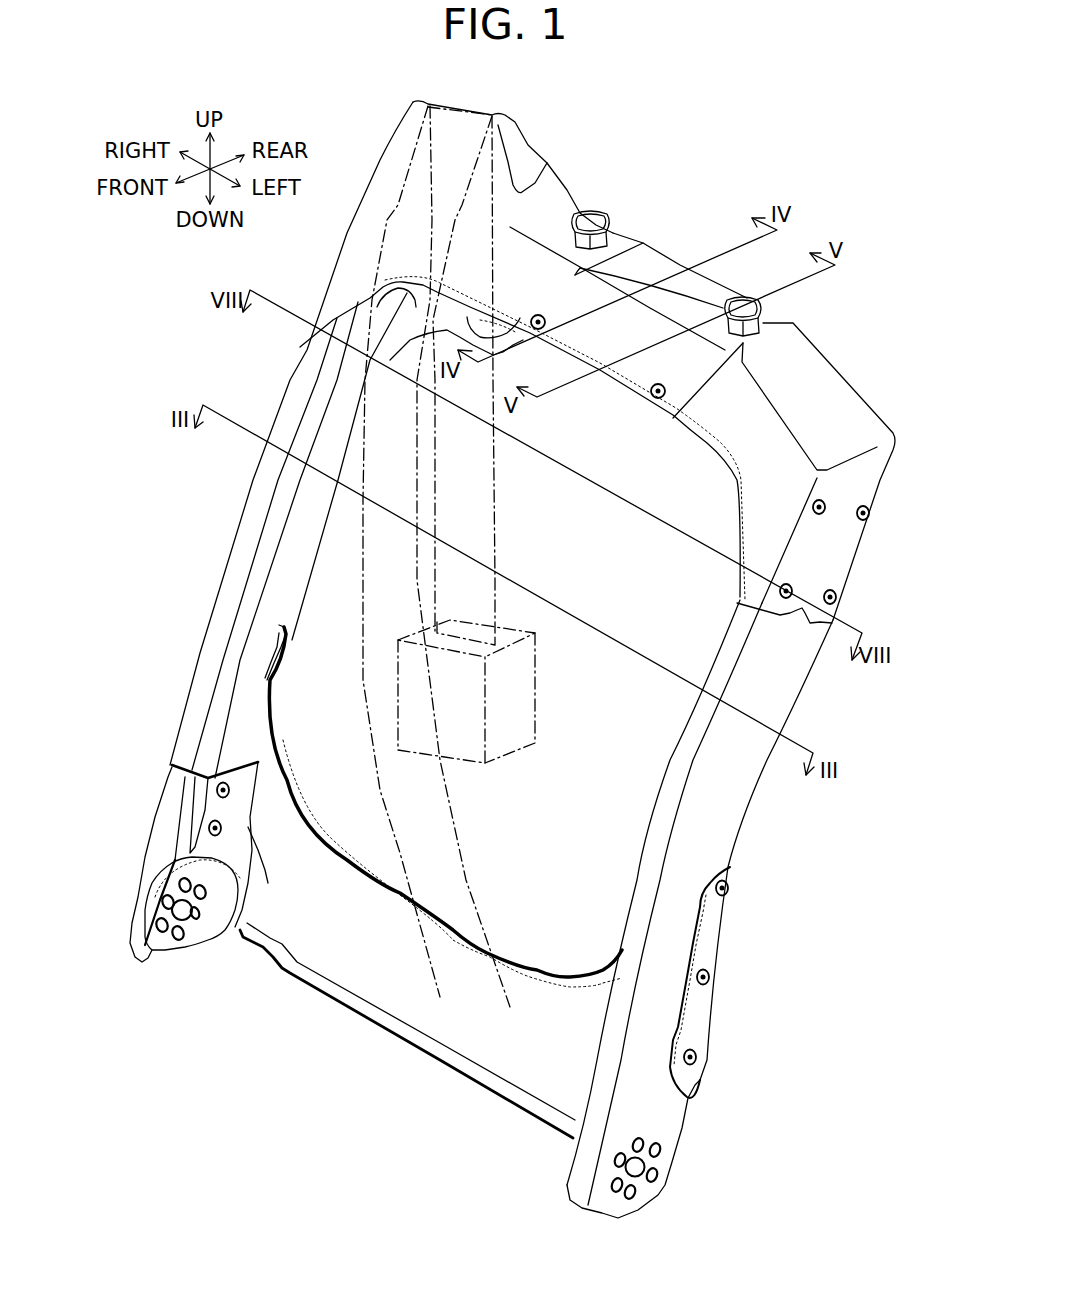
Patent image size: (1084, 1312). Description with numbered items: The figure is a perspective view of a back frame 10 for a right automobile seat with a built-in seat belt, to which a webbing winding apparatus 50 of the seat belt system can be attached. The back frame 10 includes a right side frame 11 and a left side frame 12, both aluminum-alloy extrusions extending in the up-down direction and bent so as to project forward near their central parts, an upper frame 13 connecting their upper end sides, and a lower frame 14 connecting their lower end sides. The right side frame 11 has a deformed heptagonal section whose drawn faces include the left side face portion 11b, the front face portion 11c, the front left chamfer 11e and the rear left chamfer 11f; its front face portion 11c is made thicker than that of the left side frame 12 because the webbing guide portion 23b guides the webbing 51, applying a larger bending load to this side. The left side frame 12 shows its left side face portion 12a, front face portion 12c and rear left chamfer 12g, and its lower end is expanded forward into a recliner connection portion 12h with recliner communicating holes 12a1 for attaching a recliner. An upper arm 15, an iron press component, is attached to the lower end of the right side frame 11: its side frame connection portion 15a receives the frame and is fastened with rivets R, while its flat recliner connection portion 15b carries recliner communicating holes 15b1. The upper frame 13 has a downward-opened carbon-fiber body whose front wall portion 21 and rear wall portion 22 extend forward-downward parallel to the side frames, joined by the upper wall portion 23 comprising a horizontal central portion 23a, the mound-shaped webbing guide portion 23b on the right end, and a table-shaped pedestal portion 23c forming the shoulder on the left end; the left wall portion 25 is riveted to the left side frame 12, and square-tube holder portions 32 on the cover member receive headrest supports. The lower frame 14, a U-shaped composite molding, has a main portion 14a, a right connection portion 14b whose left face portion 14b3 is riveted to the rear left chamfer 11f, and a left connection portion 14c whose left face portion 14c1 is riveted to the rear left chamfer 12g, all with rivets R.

The back frame 10 is at (207, 483).
The right side frame 11 is at (223, 550).
The left side face portion 11b is at (273, 598).
The front face portion 11c is at (227, 585).
The front left chamfer 11e is at (263, 533).
The rear left chamfer 11f is at (288, 613).
The left side frame 12 is at (752, 803).
The left side face portion 12a is at (700, 843).
The recliner communicating holes 12a1 is at (652, 1170).
The front face portion 12c is at (677, 783).
The rear left chamfer 12g is at (733, 825).
The recliner connection portion 12h is at (658, 1113).
The upper frame 13 is at (823, 347).
The lower frame 14 is at (363, 1008).
The main portion 14a is at (533, 980).
The right connection portion 14b is at (445, 807).
The left face portion 14b3 is at (290, 668).
The left connection portion 14c is at (779, 982).
The left face portion 14c1 is at (697, 1010).
The upper arm 15 is at (155, 833).
The side frame connection portion 15a is at (170, 787).
The recliner connection portion 15b is at (185, 940).
The recliner communicating holes 15b1 is at (162, 950).
The front wall portion 21 is at (682, 383).
The rear wall portion 22 is at (410, 330).
The upper wall portion 23 is at (647, 263).
The central portion 23a is at (690, 287).
The webbing guide portion 23b is at (457, 106).
The pedestal portion 23c is at (840, 420).
The left wall portion 25 is at (823, 562).
The holder portion 32 is at (600, 207).
The webbing winding apparatus 50 is at (535, 697).
The webbing 51 is at (457, 843).
The rivet R is at (535, 313).